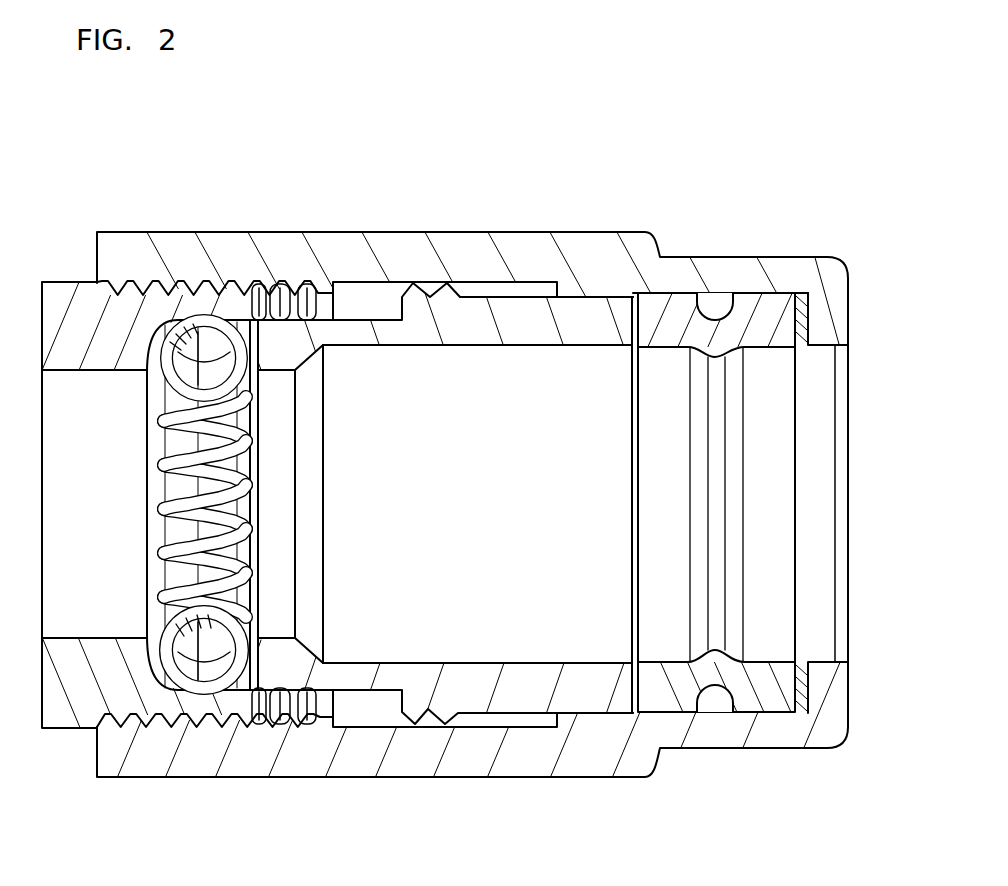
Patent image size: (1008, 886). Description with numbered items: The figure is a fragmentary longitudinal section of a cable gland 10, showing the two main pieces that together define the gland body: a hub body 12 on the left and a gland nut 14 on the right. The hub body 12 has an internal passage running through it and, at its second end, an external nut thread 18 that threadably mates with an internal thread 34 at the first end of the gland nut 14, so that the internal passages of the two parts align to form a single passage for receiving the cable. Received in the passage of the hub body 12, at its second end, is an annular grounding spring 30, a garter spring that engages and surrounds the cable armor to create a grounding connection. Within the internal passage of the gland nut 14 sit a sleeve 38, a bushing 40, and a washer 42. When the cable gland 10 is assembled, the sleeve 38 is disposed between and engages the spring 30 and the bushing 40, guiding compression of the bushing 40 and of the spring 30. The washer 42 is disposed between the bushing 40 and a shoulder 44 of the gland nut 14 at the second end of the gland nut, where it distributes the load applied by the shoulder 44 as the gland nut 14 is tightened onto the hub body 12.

The cable gland 10 is at (560, 140).
The hub body 12 is at (32, 715).
The gland nut 14 is at (582, 226).
The external nut thread 18 is at (158, 728).
The annular grounding spring 30 is at (216, 315).
The internal thread 34 is at (286, 707).
The sleeve 38 is at (508, 698).
The bushing 40 is at (668, 722).
The washer 42 is at (810, 675).
The shoulder 44 is at (838, 355).